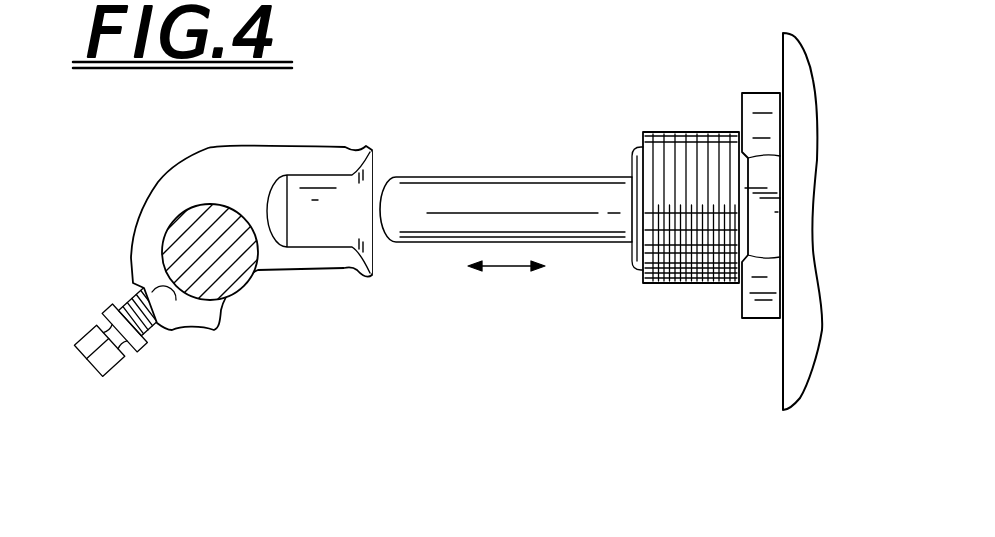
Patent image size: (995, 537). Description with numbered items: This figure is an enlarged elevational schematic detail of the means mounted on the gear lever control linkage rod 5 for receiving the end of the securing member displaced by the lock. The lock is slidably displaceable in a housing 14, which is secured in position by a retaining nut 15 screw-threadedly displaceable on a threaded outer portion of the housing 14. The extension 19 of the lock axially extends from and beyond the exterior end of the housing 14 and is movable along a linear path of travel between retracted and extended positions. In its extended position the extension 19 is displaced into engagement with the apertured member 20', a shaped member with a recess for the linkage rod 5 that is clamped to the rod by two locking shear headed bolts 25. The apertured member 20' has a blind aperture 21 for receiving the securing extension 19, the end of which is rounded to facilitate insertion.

The gear linkage rod 5 is at (236, 289).
The housing 14 is at (688, 136).
The retaining nut 15 is at (765, 104).
The extension 19 is at (530, 193).
The apertured member 20' is at (251, 224).
The blind aperture 21 is at (373, 182).
The locking shear headed bolts 25 is at (90, 338).